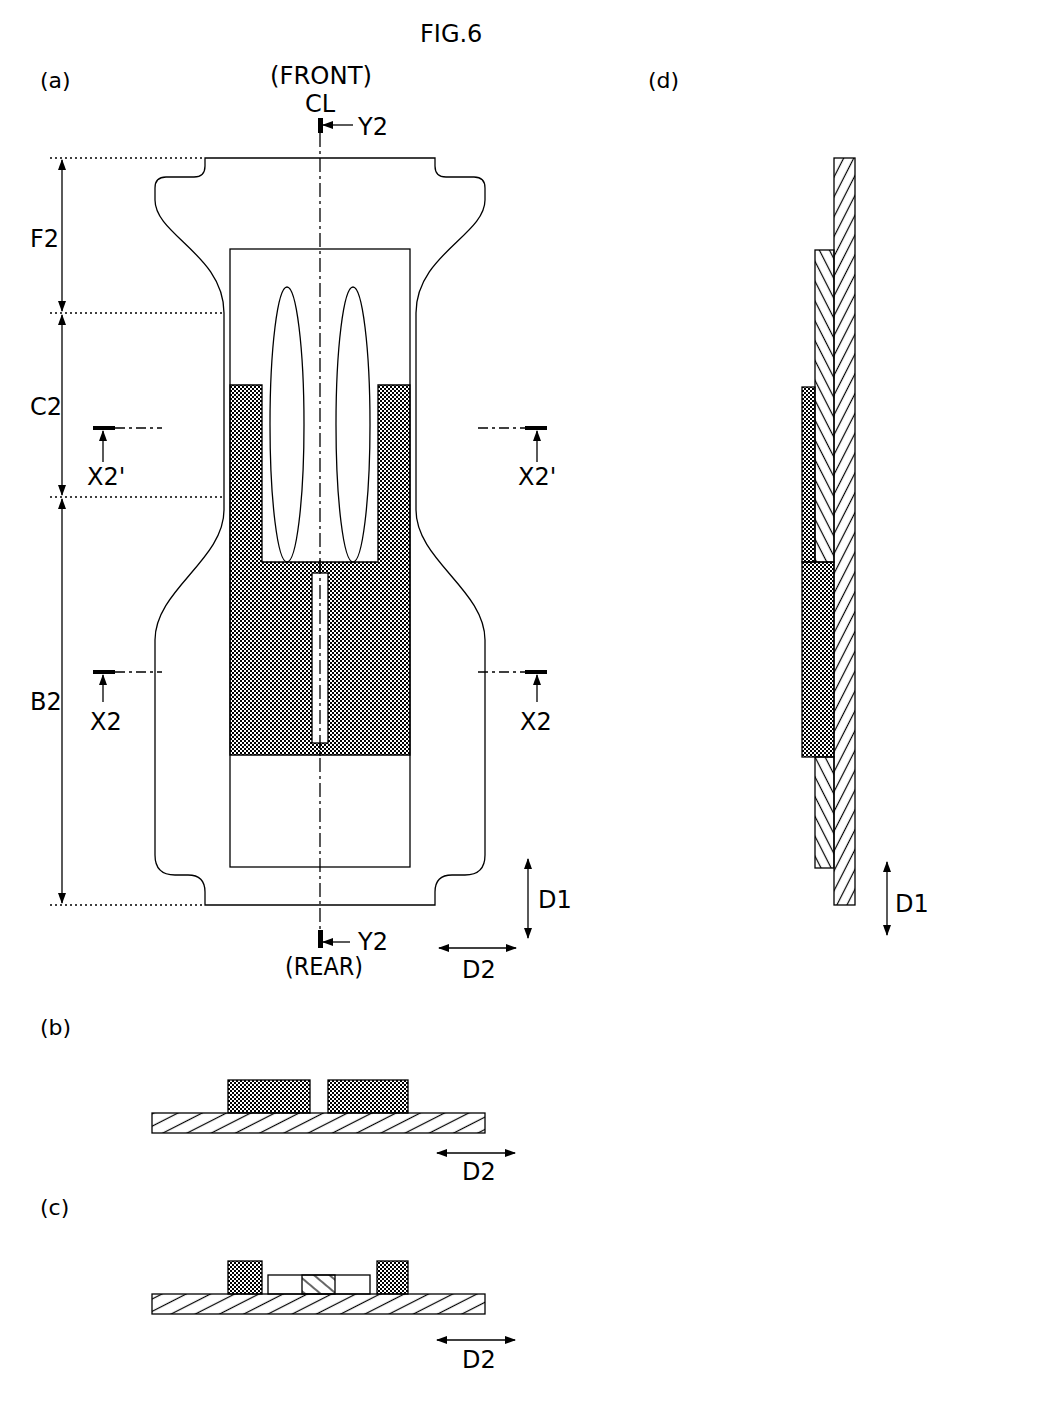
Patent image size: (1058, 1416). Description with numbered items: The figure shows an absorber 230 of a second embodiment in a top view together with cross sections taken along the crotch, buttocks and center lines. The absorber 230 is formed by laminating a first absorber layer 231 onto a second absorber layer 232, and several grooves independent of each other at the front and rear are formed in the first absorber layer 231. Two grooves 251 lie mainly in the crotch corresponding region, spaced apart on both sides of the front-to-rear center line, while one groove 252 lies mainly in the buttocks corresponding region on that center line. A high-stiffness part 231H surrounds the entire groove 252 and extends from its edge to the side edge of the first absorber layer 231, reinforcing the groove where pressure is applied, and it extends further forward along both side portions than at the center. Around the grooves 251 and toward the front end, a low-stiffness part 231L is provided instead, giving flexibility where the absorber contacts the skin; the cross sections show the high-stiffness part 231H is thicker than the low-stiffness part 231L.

The absorber 230 is at (462, 728).
The first absorber layer 231 is at (443, 807).
The low-stiffness part 231L is at (395, 345).
The high-stiffness part 231H is at (393, 417).
The second absorber layer 232 is at (473, 197).
The groove 251 is at (364, 520).
The groove 252 is at (329, 612).